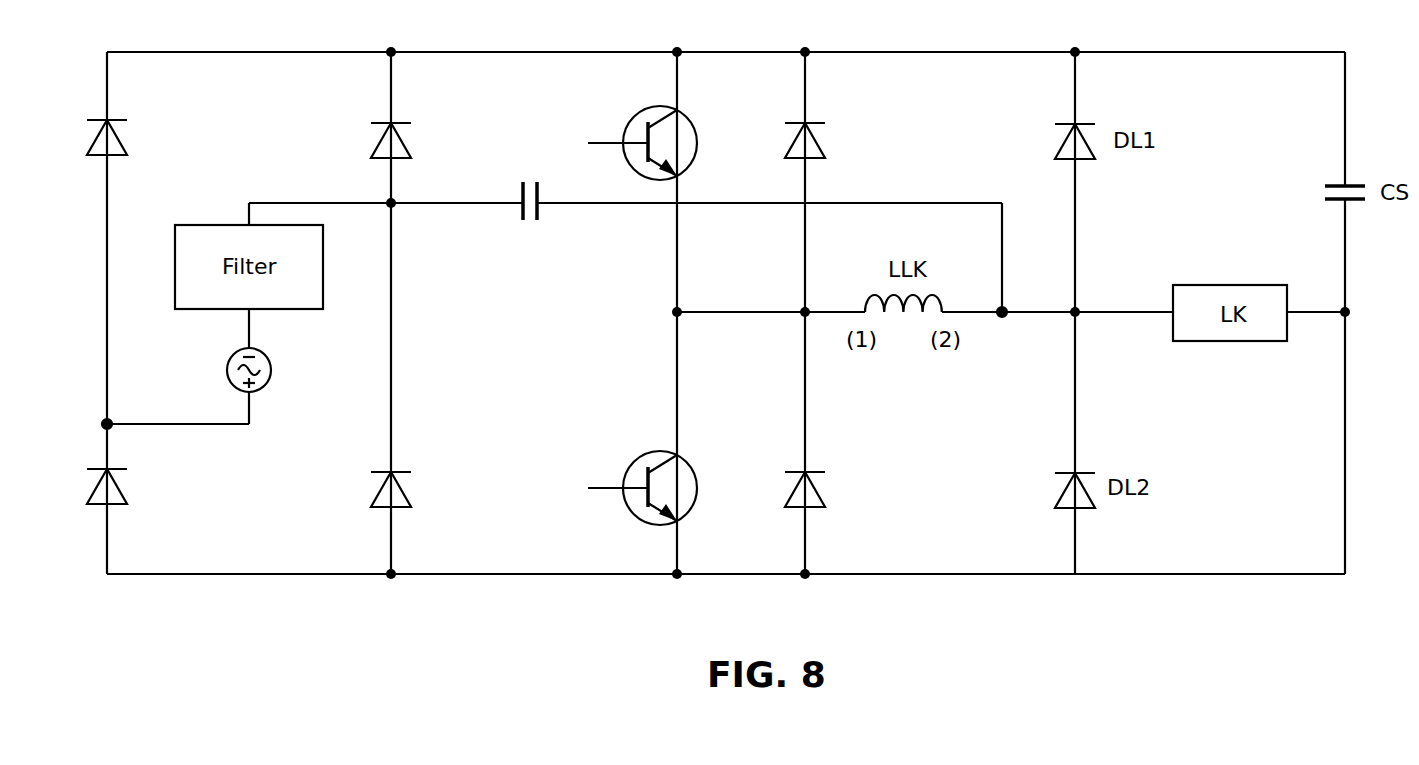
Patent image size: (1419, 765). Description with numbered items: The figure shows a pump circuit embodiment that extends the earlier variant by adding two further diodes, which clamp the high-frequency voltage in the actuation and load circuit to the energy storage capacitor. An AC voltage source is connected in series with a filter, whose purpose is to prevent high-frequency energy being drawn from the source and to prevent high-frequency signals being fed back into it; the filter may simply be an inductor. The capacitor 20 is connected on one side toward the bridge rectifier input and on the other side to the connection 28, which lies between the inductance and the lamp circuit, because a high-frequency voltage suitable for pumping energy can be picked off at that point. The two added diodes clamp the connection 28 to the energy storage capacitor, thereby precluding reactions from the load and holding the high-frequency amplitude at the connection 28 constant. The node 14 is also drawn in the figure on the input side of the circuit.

The input node / AC supply connection 14 is at (175, 410).
The capacitor 20 is at (529, 185).
The connection 28 is at (1007, 275).